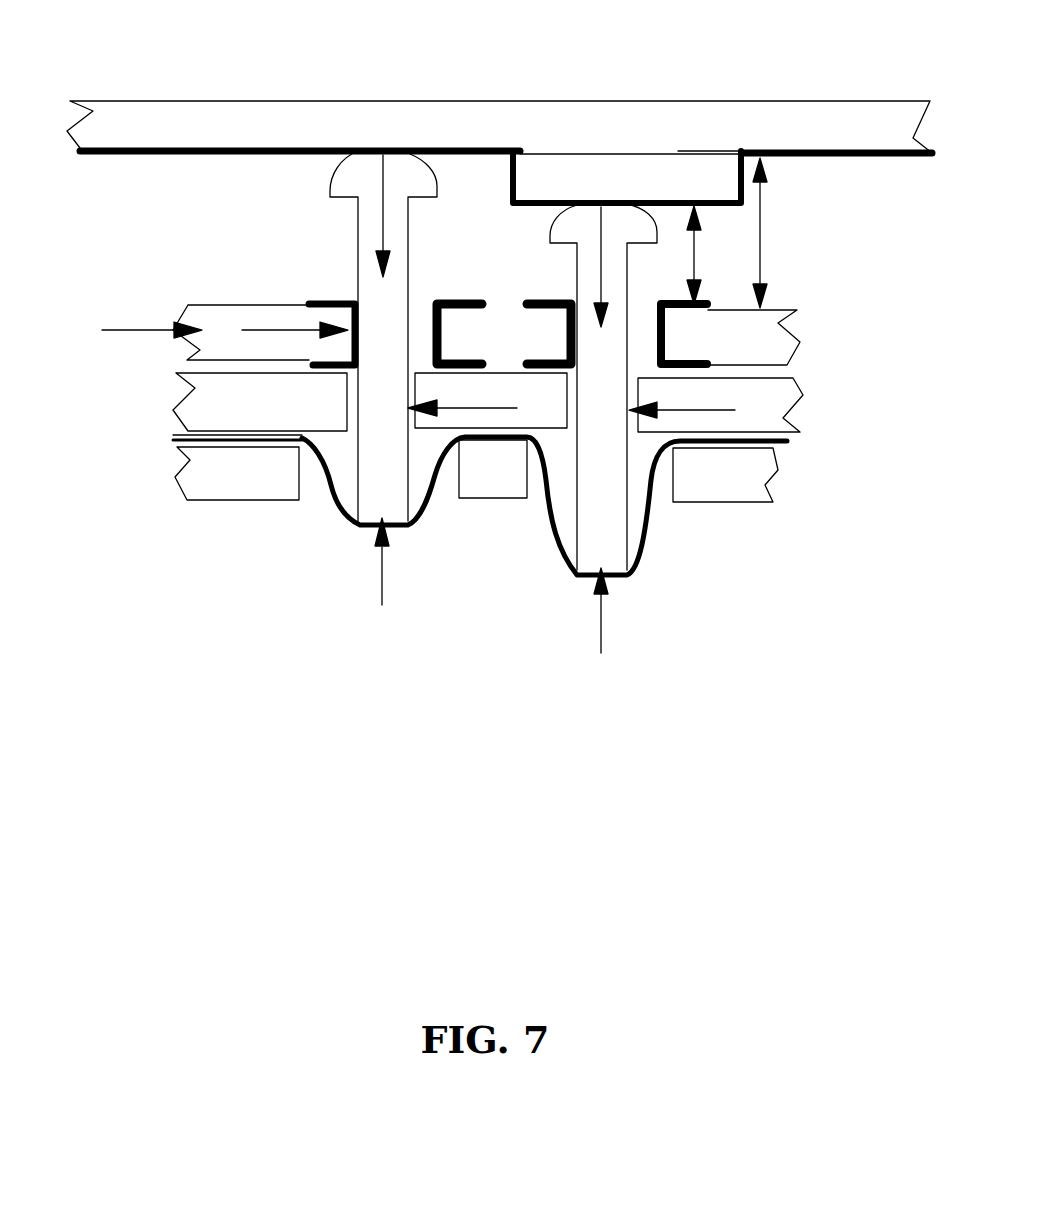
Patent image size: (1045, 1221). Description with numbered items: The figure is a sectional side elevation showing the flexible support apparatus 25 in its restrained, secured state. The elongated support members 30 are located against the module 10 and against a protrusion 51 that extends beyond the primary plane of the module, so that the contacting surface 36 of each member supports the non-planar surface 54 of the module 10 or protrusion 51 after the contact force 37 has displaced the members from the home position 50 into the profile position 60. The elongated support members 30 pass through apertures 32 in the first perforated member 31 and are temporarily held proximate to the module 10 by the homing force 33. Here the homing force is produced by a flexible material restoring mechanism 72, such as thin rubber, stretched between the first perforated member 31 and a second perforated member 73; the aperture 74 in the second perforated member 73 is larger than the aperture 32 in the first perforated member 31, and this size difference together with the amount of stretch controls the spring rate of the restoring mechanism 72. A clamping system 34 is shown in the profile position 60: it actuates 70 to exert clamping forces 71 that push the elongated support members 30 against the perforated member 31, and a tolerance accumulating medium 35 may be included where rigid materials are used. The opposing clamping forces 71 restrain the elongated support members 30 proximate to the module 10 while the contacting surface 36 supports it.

The module 10 is at (805, 135).
The flexible support apparatus 25 is at (176, 533).
The elongated support member 30 is at (387, 460).
The perforated member 31 is at (760, 405).
The aperture 32 is at (347, 375).
The homing force 33 is at (382, 572).
The clamping system 34 is at (765, 344).
The tolerance accumulating medium 35 is at (313, 300).
The contact surface 36 is at (383, 150).
The contact force 37 is at (597, 267).
The home position 50 is at (753, 213).
The protrusion 51 is at (627, 167).
The non-planar surface 54 is at (260, 147).
The profile position 60 is at (698, 263).
The actuation 70 is at (167, 335).
The clamping force 71 is at (293, 332).
The flexible material restoring mechanism 72 is at (333, 500).
The second perforated member 73 is at (733, 478).
The aperture 74 is at (422, 469).